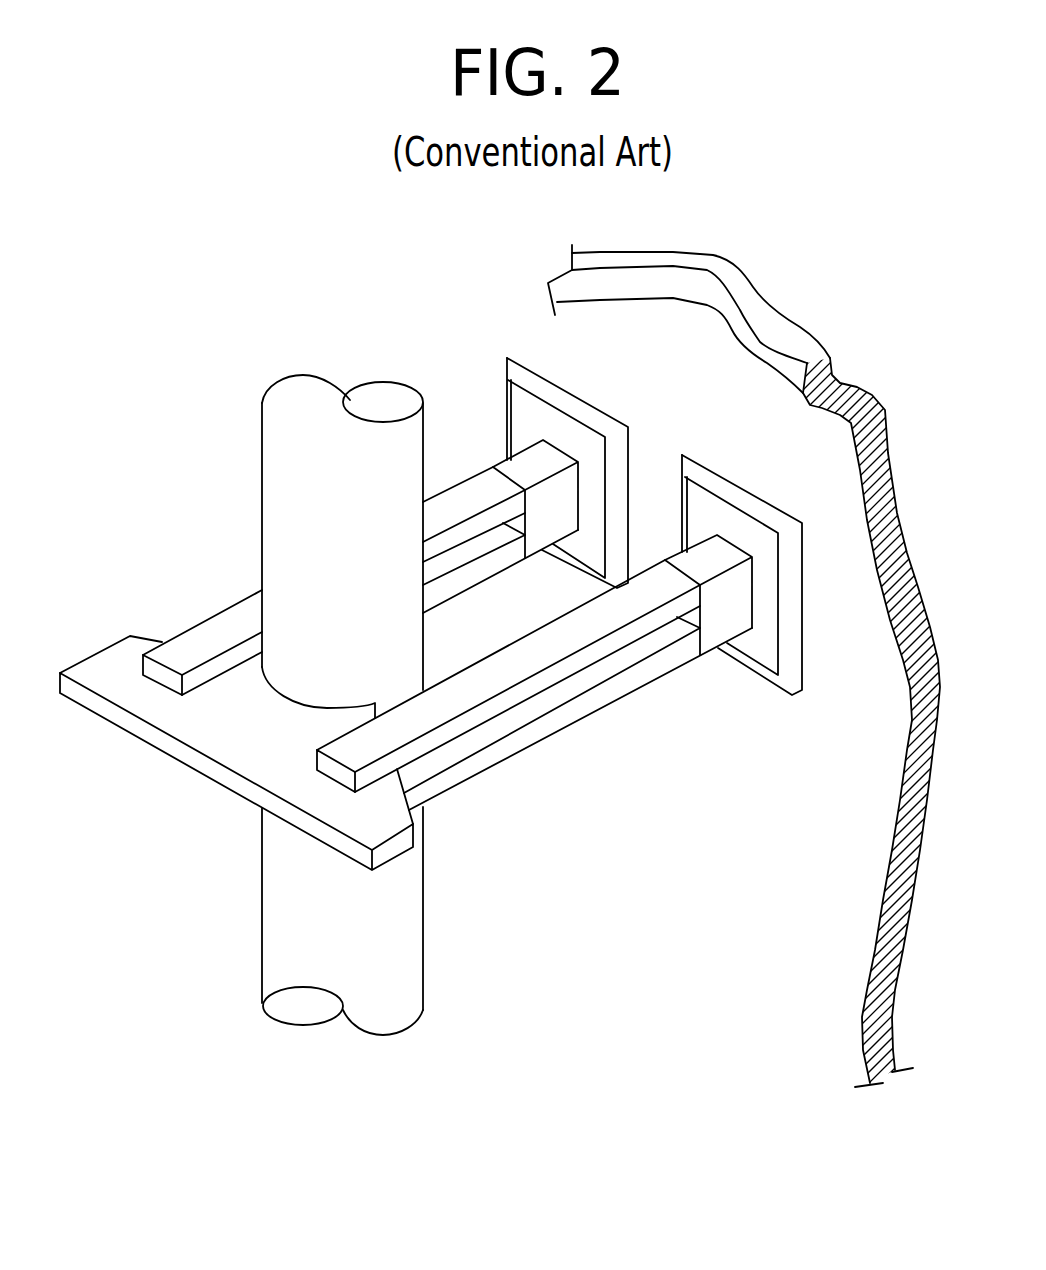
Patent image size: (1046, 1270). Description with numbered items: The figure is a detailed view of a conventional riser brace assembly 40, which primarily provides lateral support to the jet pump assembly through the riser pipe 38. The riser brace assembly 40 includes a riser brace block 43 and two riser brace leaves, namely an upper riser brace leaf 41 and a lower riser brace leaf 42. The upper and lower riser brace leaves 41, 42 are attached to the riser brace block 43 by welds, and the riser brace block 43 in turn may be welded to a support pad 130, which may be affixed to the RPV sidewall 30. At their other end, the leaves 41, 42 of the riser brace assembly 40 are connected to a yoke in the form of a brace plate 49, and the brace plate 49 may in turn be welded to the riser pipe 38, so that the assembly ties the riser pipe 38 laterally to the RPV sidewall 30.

The RPV sidewall 30 is at (747, 410).
The riser pipe 38 is at (263, 974).
The riser brace assembly 40 is at (510, 634).
The upper riser brace leaf 41 is at (473, 474).
The lower riser brace leaf 42 is at (563, 730).
The riser brace block 43 is at (678, 557).
The brace plate 49 is at (160, 752).
The support pad 130 is at (802, 685).